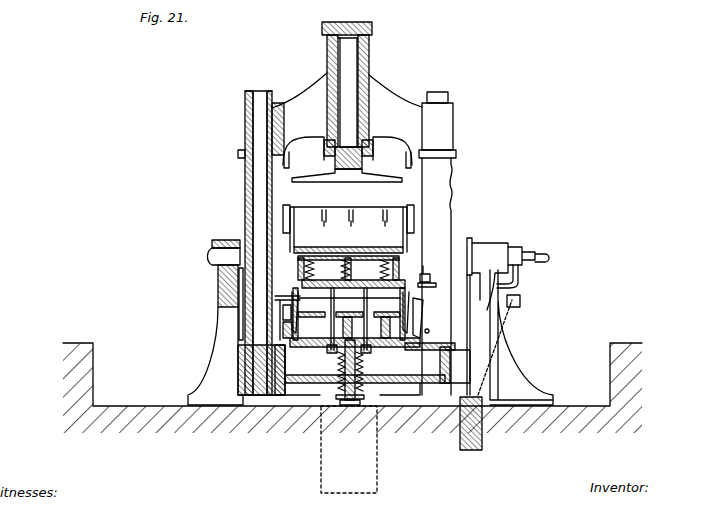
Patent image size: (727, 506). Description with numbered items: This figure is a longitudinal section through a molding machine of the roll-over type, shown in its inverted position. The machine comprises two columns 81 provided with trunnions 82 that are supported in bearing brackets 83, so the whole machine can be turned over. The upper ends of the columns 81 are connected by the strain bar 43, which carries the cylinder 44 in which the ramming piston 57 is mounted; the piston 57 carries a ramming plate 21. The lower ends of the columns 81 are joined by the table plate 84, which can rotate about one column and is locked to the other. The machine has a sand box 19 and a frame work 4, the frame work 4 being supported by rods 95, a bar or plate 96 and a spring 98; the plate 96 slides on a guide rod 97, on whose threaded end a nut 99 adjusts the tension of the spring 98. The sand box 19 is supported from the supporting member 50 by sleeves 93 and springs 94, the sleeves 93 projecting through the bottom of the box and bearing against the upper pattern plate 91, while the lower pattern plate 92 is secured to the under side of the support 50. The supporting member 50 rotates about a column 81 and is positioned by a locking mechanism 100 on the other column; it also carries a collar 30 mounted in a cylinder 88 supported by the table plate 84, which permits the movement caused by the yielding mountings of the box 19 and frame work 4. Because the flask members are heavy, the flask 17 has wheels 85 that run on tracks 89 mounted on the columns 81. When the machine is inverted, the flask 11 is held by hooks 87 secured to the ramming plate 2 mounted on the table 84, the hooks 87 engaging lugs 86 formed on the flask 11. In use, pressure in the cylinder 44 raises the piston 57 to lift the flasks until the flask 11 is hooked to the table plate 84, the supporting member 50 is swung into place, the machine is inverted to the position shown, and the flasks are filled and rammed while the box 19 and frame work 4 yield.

The ramming plate 2 is at (293, 330).
The frame work 4 is at (300, 320).
The flask 11 is at (300, 298).
The flask 17 is at (312, 214).
The sand box 19 is at (298, 246).
The ramming plate 21 is at (332, 176).
The collar 30 is at (228, 276).
The strain bar 43 is at (347, 114).
The cylinder 44 is at (371, 48).
The supporting member 50 is at (417, 271).
The ramming piston 57 is at (369, 76).
The columns 81 is at (258, 187).
The trunnions 82 is at (226, 250).
The bearing brackets 83 is at (226, 312).
The table plate 84 is at (292, 368).
The wheels 85 is at (288, 210).
The lugs 86 is at (431, 295).
The hooks 87 is at (422, 319).
The cylinder 88 is at (240, 335).
The tracks 89 is at (284, 166).
The upper pattern plate 91 is at (342, 252).
The lower pattern plate 92 is at (349, 315).
The sleeves 93 is at (321, 269).
The springs 94 is at (370, 269).
The rods 95 is at (385, 340).
The bar or plate 96 is at (343, 375).
The guide rod 97 is at (355, 372).
The spring 98 is at (338, 396).
The nut 99 is at (358, 397).
The locking mechanism 100 is at (425, 276).